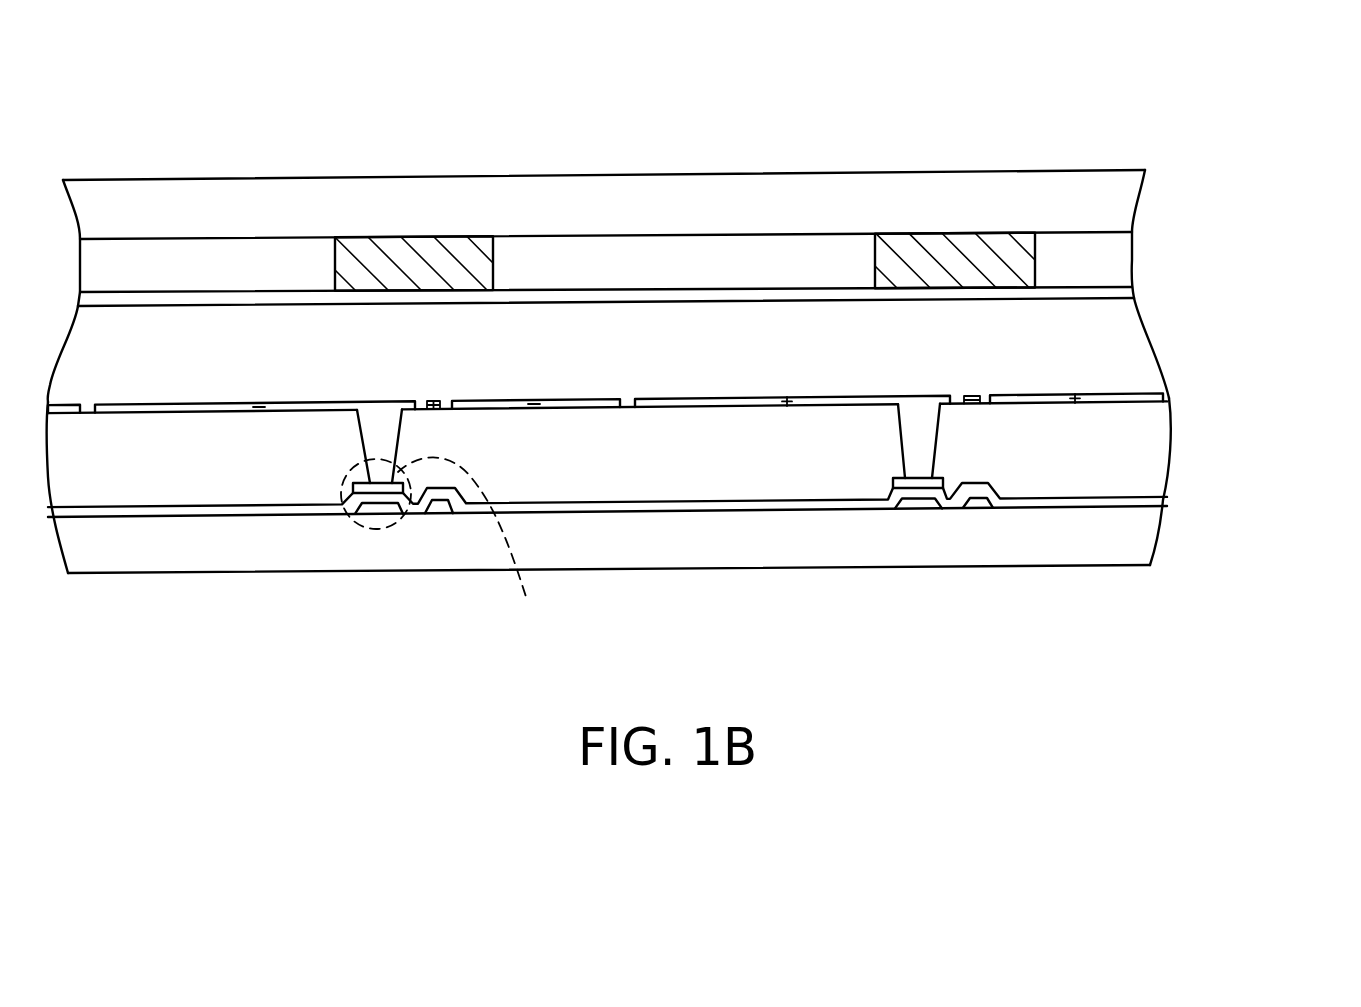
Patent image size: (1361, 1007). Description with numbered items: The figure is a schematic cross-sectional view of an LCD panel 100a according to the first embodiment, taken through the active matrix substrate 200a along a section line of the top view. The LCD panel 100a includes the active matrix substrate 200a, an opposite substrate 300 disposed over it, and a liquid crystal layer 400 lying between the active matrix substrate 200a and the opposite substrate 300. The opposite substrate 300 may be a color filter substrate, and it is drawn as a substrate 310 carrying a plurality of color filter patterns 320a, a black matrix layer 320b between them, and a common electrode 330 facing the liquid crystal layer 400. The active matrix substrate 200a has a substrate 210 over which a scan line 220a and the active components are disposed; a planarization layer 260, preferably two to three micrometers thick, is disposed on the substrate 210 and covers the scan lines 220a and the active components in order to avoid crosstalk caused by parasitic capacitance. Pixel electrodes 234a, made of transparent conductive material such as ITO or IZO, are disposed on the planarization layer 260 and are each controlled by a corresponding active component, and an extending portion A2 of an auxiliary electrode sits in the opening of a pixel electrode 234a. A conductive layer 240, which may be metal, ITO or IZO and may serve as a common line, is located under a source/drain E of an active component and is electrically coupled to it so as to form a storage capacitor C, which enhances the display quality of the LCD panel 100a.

The LCD panel 100a is at (1262, 705).
The opposite substrate 300 is at (1195, 210).
The substrate 310 is at (648, 222).
The color filter patterns 320a is at (255, 281).
The black matrix layer 320b is at (435, 260).
The common electrode 330 is at (1120, 292).
The liquid crystal layer 400 is at (1112, 353).
The active matrix substrate 200a is at (1200, 450).
The substrate 210 is at (1120, 537).
The planarization layer 260 is at (226, 472).
The pixel electrode 234a is at (830, 404).
The conductive layer 240 is at (380, 506).
The scan line 220a is at (440, 507).
The extending portion A2 is at (970, 394).
The source/drain E is at (353, 488).
The storage capacitor C is at (469, 550).